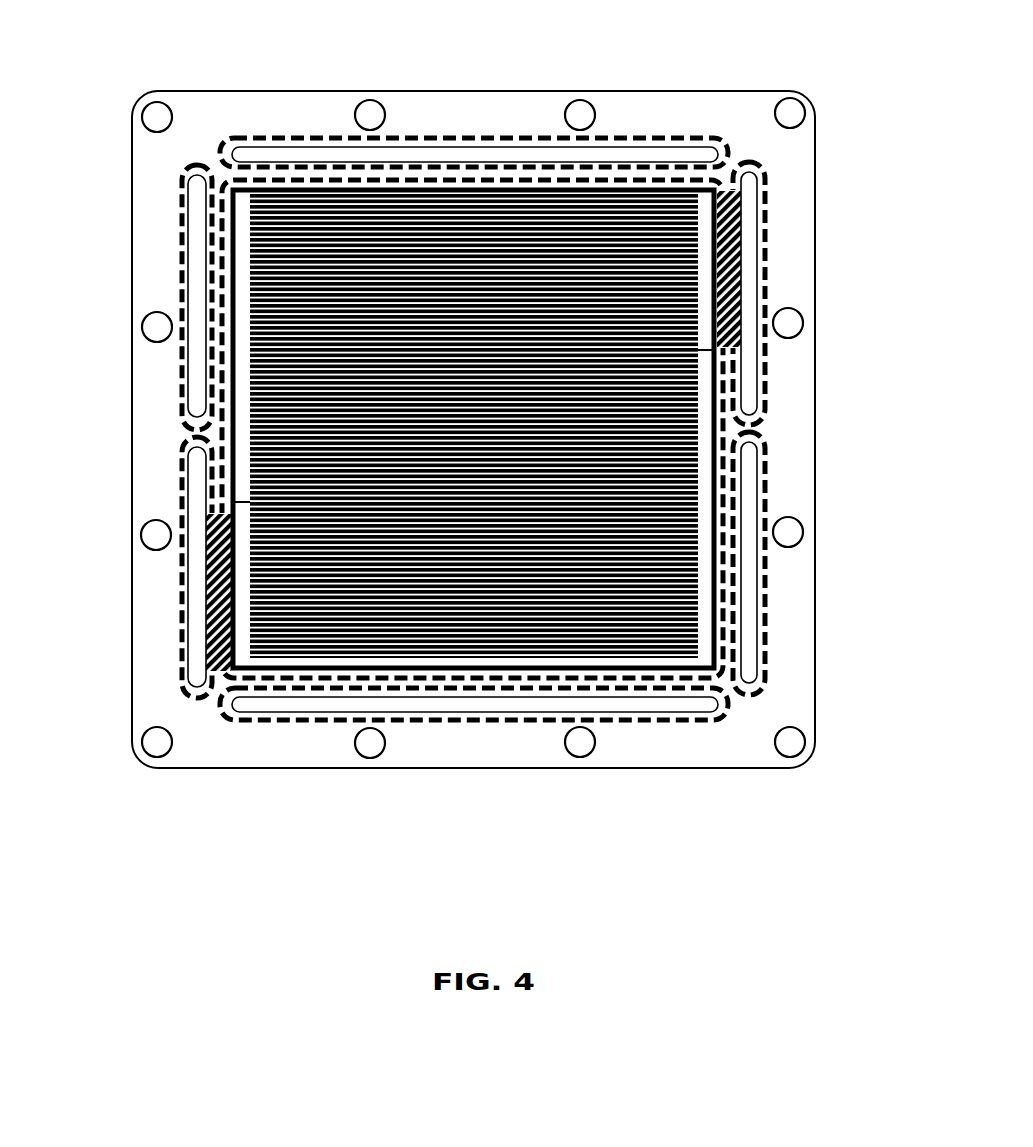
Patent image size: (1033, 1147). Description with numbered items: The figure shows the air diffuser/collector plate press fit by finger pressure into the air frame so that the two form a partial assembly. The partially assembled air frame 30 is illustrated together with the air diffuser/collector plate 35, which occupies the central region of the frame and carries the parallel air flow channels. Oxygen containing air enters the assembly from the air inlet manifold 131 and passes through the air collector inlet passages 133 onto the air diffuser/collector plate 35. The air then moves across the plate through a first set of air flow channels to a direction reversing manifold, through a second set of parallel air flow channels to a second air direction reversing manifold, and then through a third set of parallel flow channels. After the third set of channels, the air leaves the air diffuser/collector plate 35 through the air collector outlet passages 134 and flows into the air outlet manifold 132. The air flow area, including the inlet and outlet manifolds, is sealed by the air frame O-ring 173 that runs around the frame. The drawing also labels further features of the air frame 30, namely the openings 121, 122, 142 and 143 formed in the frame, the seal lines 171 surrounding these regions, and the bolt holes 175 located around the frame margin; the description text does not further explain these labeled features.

The air frame 30 is at (428, 85).
The air diffuser/collector plate 35 is at (452, 615).
The top manifold opening 121 is at (633, 155).
The bottom manifold opening 122 is at (383, 707).
The air inlet manifold 131 is at (748, 292).
The air outlet manifold 132 is at (195, 598).
The air collector inlet passages 133 is at (742, 250).
The air collector outlet passages 134 is at (200, 640).
The right lower manifold opening 142 is at (750, 618).
The left upper manifold opening 143 is at (195, 285).
The seal gasket 171 is at (513, 138).
The air frame O-ring 173 is at (180, 478).
The bolt holes 175 is at (173, 100).